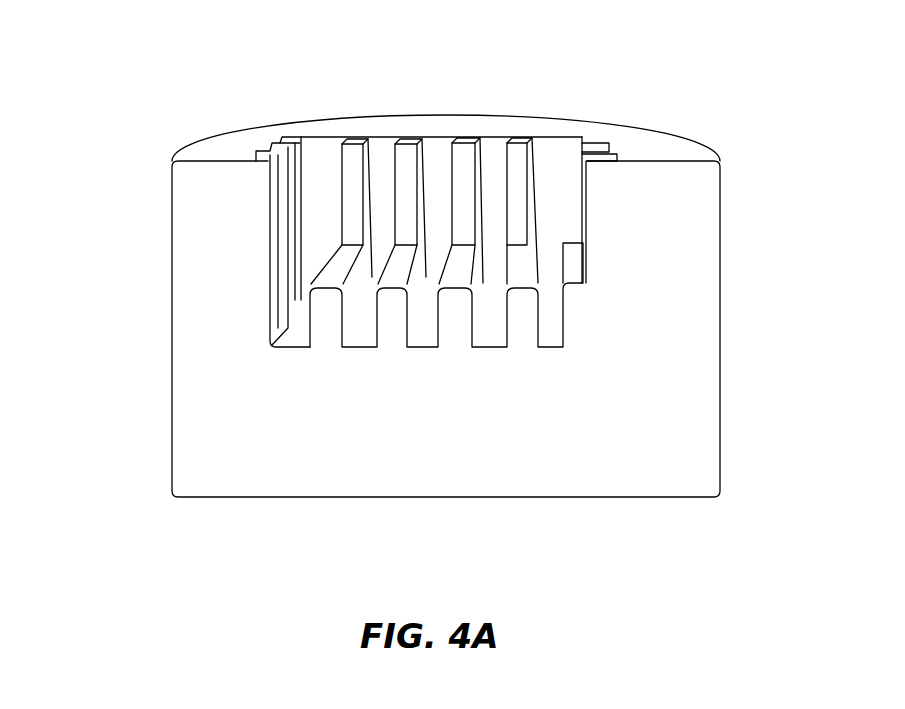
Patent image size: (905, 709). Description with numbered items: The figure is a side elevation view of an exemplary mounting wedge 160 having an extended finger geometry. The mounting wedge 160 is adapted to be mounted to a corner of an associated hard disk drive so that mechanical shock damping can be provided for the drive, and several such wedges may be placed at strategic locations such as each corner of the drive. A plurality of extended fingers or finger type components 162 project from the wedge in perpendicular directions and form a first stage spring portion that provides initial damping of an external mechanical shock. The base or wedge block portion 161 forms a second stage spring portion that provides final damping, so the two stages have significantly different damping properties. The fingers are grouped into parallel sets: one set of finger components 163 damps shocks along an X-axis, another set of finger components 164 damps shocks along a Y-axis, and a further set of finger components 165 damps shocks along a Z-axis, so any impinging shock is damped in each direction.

The mounting wedge 160 is at (150, 117).
The base or wedge block portion 161 is at (207, 302).
The finger type components 162 is at (344, 263).
The set of finger components 163 is at (598, 162).
The set of finger components 164 is at (512, 160).
The set of finger components 165 is at (457, 340).